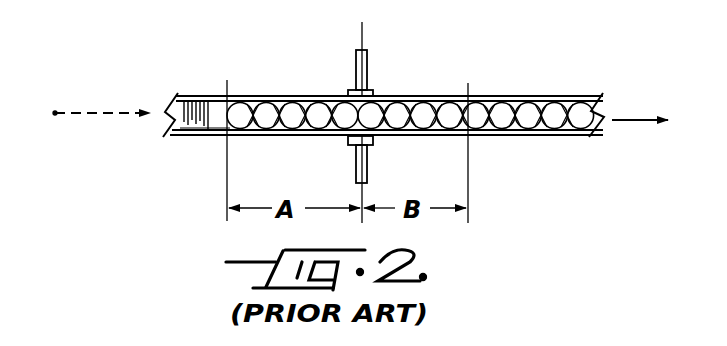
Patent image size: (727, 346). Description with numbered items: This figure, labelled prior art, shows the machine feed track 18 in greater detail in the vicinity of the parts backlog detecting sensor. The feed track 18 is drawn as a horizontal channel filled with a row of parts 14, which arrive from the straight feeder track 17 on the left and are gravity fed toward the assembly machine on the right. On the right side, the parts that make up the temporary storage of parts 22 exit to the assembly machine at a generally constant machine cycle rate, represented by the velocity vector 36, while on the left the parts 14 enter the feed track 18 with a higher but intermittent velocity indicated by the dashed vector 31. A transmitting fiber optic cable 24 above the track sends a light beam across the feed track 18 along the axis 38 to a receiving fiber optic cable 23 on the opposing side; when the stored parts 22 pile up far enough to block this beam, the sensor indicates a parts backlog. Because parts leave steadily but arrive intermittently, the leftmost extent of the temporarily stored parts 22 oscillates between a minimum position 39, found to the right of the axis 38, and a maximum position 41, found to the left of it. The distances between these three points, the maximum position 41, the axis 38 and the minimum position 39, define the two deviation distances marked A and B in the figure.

The parts 14 is at (464, 103).
The straight feeder track 17 is at (203, 95).
The machine feed track 18 is at (441, 96).
The temporary storage of parts 22 is at (546, 135).
The receiving fiber optic cable 23 is at (356, 160).
The transmitting fiber optic cable 24 is at (356, 80).
The inlet flow arrow 31 is at (110, 115).
The velocity vector 36 is at (627, 122).
The axis of the parts detecting light beam 38 is at (374, 140).
The minimum position 39 is at (470, 138).
The maximum position 41 is at (226, 136).